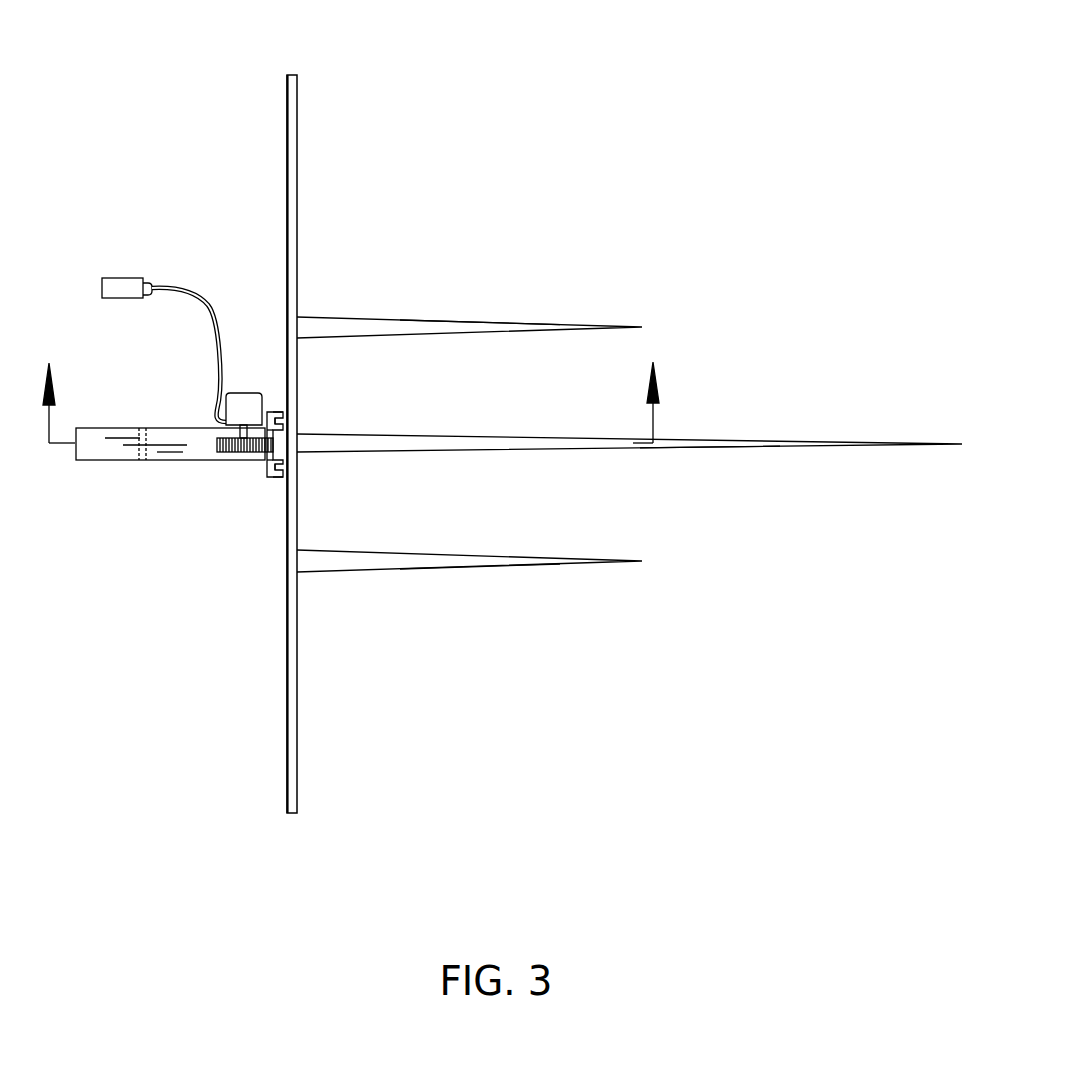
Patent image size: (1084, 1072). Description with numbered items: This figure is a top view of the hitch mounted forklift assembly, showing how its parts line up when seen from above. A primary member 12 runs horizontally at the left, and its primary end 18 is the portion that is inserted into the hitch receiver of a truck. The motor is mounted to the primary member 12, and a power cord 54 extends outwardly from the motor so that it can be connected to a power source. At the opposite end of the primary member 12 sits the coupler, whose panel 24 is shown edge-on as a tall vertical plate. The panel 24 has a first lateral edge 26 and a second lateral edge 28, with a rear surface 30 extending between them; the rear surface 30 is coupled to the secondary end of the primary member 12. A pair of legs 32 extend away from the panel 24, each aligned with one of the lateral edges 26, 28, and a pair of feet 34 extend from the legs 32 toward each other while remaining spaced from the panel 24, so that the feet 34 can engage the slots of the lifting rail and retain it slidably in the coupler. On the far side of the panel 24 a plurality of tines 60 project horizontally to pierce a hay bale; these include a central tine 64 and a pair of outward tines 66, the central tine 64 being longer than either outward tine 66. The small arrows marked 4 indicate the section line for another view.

The section line 4- 4 is at (365, 392).
The primary member 12 is at (109, 427).
The primary end 18 is at (74, 458).
The panel 24 is at (258, 408).
The first lateral edge 26 is at (266, 412).
The second lateral edge 28 is at (266, 478).
The rear surface 30 is at (267, 468).
The legs 32 is at (273, 412).
The feet 34 is at (284, 421).
The power cord 54 is at (180, 286).
The tines 60 is at (552, 319).
The central tine 64 is at (706, 480).
The outward tines 66 is at (472, 302).